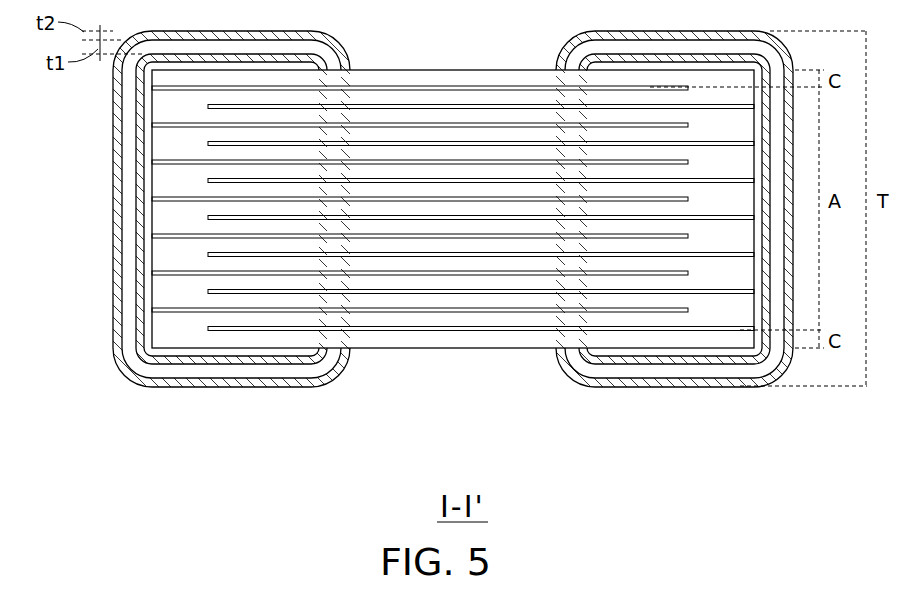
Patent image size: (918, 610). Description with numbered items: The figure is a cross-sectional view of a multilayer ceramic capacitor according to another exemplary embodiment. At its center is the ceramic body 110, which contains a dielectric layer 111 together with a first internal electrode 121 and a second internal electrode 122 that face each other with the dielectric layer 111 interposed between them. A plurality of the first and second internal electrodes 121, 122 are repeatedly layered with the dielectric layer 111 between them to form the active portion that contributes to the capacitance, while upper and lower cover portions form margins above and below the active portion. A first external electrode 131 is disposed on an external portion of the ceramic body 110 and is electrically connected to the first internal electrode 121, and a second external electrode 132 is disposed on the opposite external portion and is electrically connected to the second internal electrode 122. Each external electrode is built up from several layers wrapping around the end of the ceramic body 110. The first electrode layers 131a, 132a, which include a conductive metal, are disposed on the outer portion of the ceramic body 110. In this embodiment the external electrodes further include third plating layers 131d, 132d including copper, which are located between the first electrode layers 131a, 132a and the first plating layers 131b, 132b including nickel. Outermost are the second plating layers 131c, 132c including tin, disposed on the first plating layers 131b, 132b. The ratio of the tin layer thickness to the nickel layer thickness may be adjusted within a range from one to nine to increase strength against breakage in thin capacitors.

The ceramic body 110 is at (477, 68).
The dielectric layer 111 is at (165, 253).
The first internal electrode 121 is at (172, 89).
The second internal electrode 122 is at (216, 109).
The first external electrode 131 is at (227, 257).
The first electrode layer 131a is at (325, 447).
The first plating layer 131b is at (207, 374).
The second plating layer 131c is at (250, 368).
The third plating layer 131d is at (290, 359).
The second external electrode 132 is at (676, 257).
The first electrode layer 132a is at (578, 447).
The first plating layer 132b is at (705, 374).
The second plating layer 132c is at (660, 368).
The third plating layer 132d is at (612, 359).